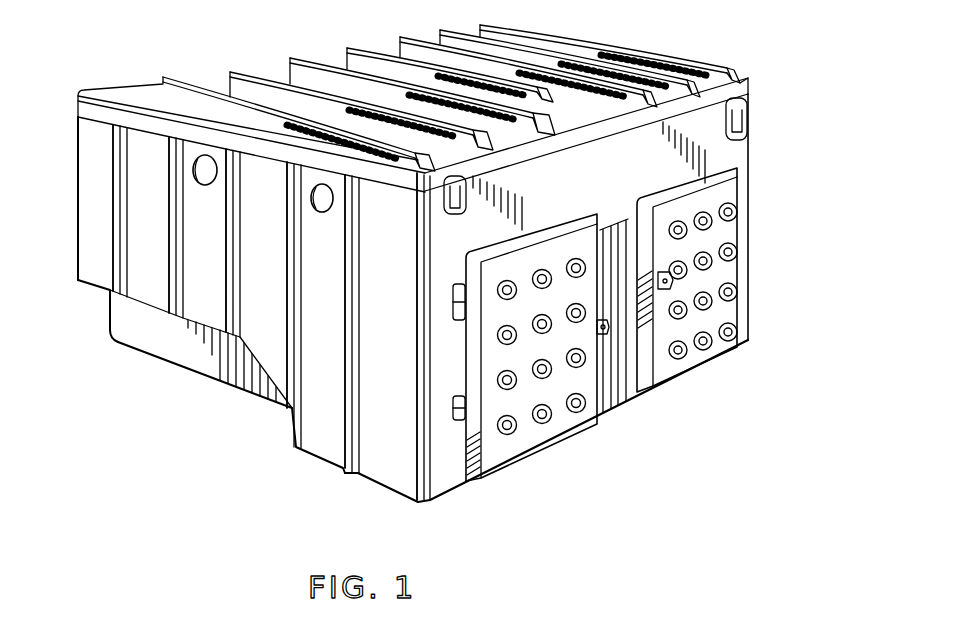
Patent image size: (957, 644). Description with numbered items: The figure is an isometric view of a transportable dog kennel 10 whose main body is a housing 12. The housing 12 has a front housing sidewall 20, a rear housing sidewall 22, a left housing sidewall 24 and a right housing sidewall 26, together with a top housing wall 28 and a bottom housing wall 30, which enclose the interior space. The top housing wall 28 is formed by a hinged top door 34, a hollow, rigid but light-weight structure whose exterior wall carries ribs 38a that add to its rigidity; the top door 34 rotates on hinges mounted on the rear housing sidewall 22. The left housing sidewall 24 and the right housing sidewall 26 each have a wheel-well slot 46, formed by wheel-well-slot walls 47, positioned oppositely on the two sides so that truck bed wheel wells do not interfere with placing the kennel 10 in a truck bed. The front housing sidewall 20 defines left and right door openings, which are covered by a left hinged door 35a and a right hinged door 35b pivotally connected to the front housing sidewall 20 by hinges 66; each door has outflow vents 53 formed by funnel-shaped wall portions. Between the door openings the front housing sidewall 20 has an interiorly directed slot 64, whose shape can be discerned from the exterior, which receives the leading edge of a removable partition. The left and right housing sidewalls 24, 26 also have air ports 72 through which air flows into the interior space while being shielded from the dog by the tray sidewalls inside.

The transportable kennel 10 is at (425, 273).
The housing 12 is at (383, 304).
The front housing sidewall 20 is at (444, 112).
The rear housing sidewall 22 is at (77, 153).
The left housing sidewall 24 is at (317, 400).
The right housing sidewall 26 is at (752, 146).
The top housing wall 28 is at (587, 100).
The bottom housing wall 30 is at (327, 465).
The hinged top door 34 is at (373, 66).
The left hinged door 35a is at (526, 375).
The right hinged door 35b is at (713, 352).
The ribs 38a is at (203, 73).
The wheel-well slots 46 is at (112, 317).
The wheel-well-slot walls 47 is at (173, 340).
The outflow vents 53 is at (553, 418).
The interiorly directed slot 64 is at (617, 403).
The hinges 66 is at (457, 427).
The air ports 72 is at (328, 204).